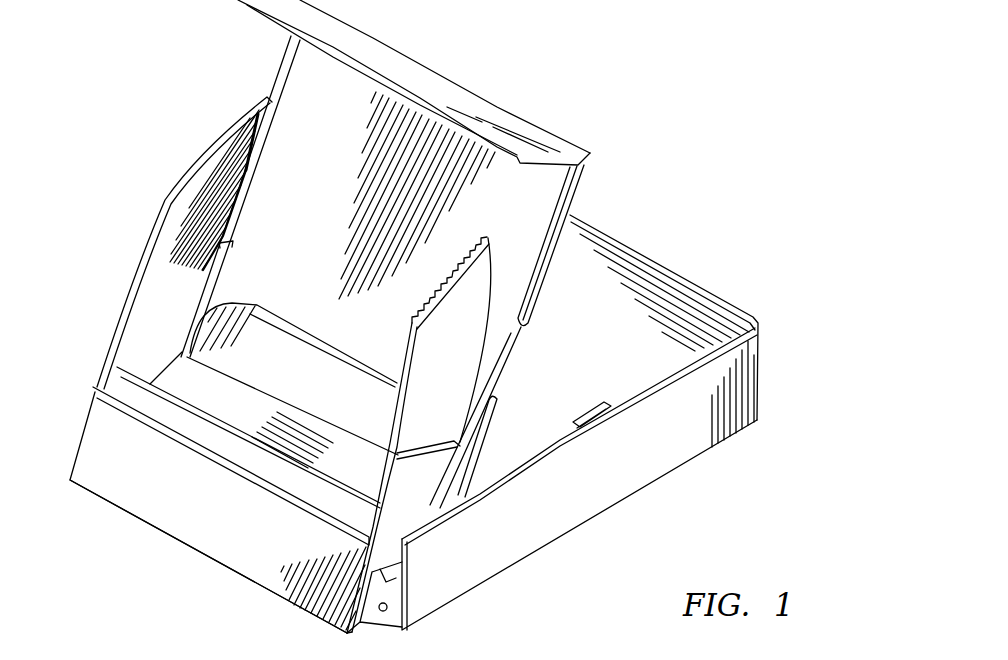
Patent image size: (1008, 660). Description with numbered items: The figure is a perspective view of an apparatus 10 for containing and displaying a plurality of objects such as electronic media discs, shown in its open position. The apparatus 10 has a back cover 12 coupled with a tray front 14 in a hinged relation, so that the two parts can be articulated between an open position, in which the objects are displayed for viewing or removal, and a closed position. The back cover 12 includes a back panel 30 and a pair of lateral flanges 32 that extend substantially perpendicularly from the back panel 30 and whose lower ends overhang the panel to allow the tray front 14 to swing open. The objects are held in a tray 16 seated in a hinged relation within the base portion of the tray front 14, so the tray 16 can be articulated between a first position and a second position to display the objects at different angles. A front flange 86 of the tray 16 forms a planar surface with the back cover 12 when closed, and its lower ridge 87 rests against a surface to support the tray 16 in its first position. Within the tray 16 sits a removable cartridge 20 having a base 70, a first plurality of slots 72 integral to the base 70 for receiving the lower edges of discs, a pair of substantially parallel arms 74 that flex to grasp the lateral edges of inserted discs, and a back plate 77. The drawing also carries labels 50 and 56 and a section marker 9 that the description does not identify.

The apparatus 10 is at (558, 82).
The back cover 12 is at (673, 272).
The tray front 14 is at (590, 155).
The tray 16 is at (415, 500).
The cartridge 20 is at (152, 232).
The back panel 30 is at (623, 360).
The lateral flanges 32 is at (593, 460).
The inner surface of lid 50 is at (318, 90).
The top edge plate of lid 56 is at (363, 44).
The base 70 is at (200, 396).
The first plurality of slots 72 is at (253, 442).
The arms 74 is at (220, 143).
The back plate 77 is at (267, 362).
The front flange 86 is at (250, 552).
The lower ridge 87 is at (290, 607).
The section line of FIG. 9 is at (310, 383).